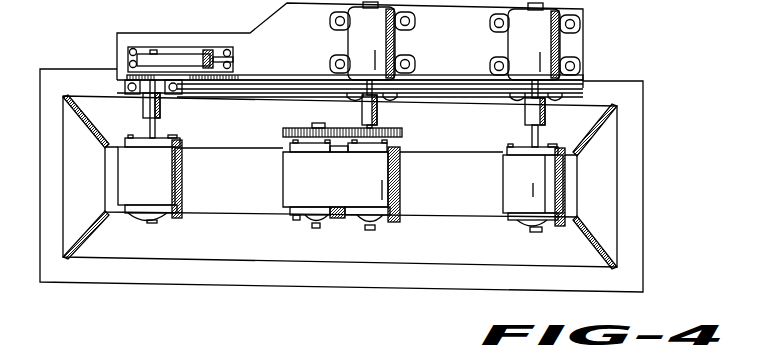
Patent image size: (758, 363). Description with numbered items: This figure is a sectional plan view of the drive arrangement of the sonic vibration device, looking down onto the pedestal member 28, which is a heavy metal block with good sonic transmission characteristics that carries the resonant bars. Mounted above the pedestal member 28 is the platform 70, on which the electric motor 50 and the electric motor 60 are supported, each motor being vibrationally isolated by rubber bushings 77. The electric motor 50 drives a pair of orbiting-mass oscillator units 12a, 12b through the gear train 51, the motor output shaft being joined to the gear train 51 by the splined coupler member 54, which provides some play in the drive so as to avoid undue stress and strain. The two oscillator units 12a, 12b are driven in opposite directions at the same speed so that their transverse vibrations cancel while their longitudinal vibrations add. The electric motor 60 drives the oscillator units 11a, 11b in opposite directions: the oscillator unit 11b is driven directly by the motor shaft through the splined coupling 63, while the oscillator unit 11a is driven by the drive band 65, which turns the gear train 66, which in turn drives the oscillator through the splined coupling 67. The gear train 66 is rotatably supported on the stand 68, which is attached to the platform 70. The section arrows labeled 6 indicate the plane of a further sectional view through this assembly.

The pedestal member 28 is at (598, 194).
The platform 70 is at (133, 22).
The stand 68 is at (140, 50).
The gear train 66 is at (163, 77).
The drive band 65 is at (307, 93).
The section line 6- 6 is at (90, 88).
The electric motor 50 is at (357, 42).
The electric motor 60 is at (506, 42).
The rubber bushings 77 is at (331, 23).
The oscillator unit 11a is at (163, 186).
The oscillator unit 11b is at (520, 210).
The orbiting-mass oscillator unit 12a is at (380, 213).
The orbiting-mass oscillator unit 12b is at (305, 213).
The gear train 51 is at (396, 132).
The splined coupler member 54 is at (360, 114).
The splined coupling 67 is at (162, 108).
The splined coupling 63 is at (547, 112).